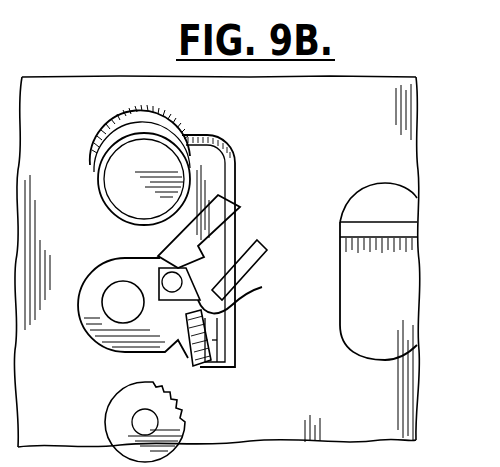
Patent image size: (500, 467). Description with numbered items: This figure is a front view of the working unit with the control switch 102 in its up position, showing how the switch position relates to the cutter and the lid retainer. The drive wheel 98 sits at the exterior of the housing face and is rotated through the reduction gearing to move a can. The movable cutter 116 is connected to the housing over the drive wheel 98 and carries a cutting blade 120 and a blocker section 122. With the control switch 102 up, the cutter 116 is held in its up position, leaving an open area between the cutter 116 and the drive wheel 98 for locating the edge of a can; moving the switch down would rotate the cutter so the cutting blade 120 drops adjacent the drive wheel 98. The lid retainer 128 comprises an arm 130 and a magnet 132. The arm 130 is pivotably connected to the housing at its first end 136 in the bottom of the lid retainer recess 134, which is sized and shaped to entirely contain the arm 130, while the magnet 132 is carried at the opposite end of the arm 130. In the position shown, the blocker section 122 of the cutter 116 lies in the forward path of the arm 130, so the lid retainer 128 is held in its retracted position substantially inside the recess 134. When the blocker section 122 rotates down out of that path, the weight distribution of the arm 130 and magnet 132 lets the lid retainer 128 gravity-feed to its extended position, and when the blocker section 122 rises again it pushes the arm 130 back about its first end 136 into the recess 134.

The drive wheel 98 is at (117, 412).
The control switch 102 is at (348, 232).
The cutter 116 is at (88, 333).
The cutting blade 120 is at (185, 368).
The blocker section 122 is at (243, 207).
The lid retainer 128 is at (112, 183).
The arm 130 is at (232, 153).
The magnet 132 is at (125, 157).
The lid retainer recess 134 is at (178, 121).
The first end 136 is at (212, 340).